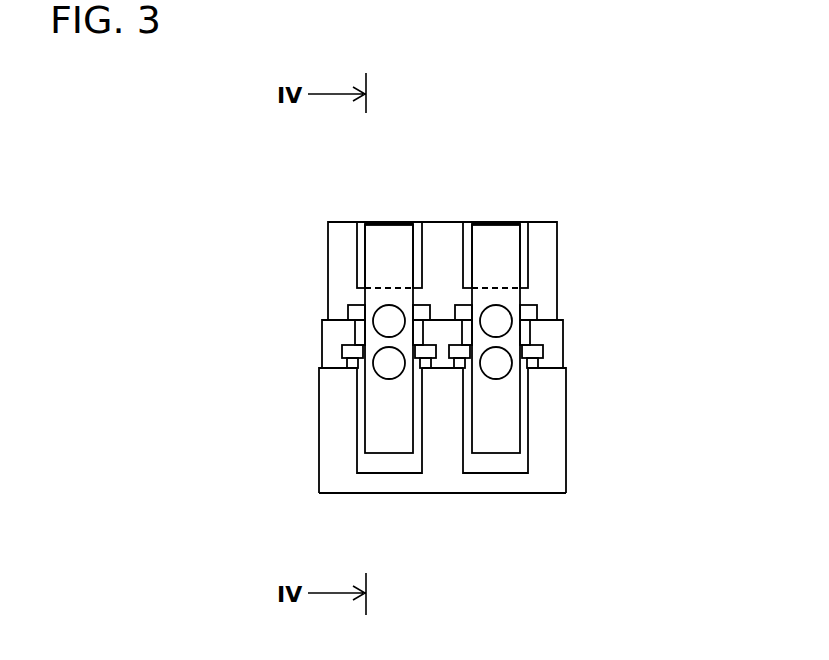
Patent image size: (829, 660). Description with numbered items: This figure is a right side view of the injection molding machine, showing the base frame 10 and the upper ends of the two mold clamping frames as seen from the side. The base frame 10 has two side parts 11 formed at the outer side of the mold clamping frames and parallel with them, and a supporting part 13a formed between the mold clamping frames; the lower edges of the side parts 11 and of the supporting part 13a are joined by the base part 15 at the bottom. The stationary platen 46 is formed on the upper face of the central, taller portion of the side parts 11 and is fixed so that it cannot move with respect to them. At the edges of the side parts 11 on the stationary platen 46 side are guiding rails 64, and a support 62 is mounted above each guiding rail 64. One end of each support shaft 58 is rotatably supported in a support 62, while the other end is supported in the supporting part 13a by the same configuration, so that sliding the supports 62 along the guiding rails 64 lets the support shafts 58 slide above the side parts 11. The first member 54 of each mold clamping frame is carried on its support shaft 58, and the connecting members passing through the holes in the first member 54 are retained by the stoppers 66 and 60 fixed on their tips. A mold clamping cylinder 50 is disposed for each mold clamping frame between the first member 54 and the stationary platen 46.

The base frame 10 is at (577, 420).
The side part 11 is at (319, 442).
The supporting part 13a is at (443, 320).
The base part 15 is at (440, 493).
The stationary platen 46 is at (557, 268).
The mold clamping cylinder 50 is at (357, 230).
The first member 54 is at (383, 222).
The support shaft 58 is at (355, 343).
The stopper 60 is at (378, 311).
The support 62 is at (342, 352).
The guiding rail 64 is at (340, 366).
The stopper 66 is at (389, 379).